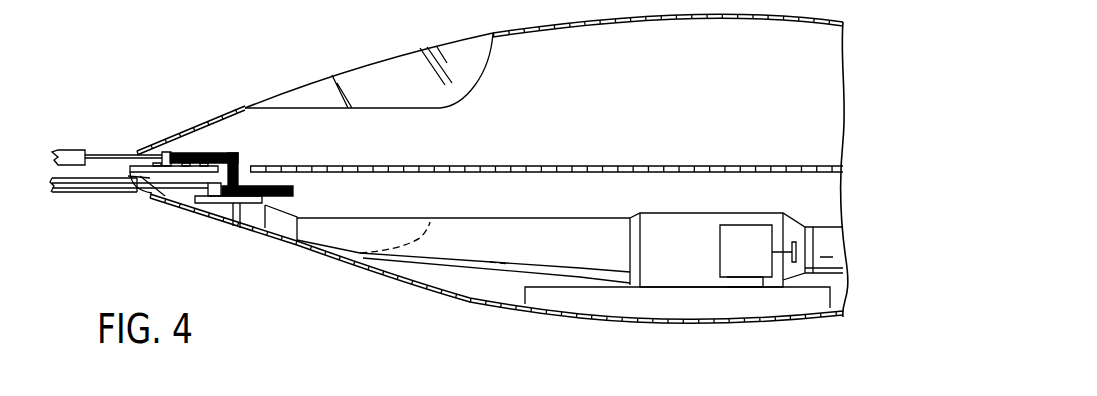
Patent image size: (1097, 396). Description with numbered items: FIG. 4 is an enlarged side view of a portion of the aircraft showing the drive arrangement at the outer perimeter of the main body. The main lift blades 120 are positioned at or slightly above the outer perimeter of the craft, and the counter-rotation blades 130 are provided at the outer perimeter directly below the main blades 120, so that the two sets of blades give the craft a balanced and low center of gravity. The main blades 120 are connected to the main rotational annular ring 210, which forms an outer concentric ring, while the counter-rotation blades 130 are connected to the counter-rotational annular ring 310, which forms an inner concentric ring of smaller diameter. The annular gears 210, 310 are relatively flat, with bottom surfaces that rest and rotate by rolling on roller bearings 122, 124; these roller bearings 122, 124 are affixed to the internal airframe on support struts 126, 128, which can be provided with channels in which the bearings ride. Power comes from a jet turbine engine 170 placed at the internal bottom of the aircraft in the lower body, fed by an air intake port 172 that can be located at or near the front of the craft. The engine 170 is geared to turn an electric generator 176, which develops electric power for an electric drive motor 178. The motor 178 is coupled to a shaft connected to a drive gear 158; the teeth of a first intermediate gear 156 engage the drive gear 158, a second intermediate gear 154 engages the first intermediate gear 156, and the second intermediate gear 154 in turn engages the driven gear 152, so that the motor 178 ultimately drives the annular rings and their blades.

The main lift blades 120 is at (69, 148).
The roller bearing 122 is at (167, 195).
The roller bearing 124 is at (213, 203).
The support strut 126 is at (142, 169).
The support strut 128 is at (234, 232).
The counter-rotation blades 130 is at (66, 195).
The driven gear 152 is at (222, 120).
The second intermediate gear 154 is at (237, 158).
The first intermediate gear 156 is at (257, 174).
The drive gear 158 is at (288, 171).
The jet turbine engine 170 is at (658, 213).
The air intake port 172 is at (434, 222).
The electric generator 176 is at (732, 232).
The electric drive motor 178 is at (280, 226).
The main rotational annular ring 210 is at (155, 152).
The counter-rotational annular ring 310 is at (207, 190).